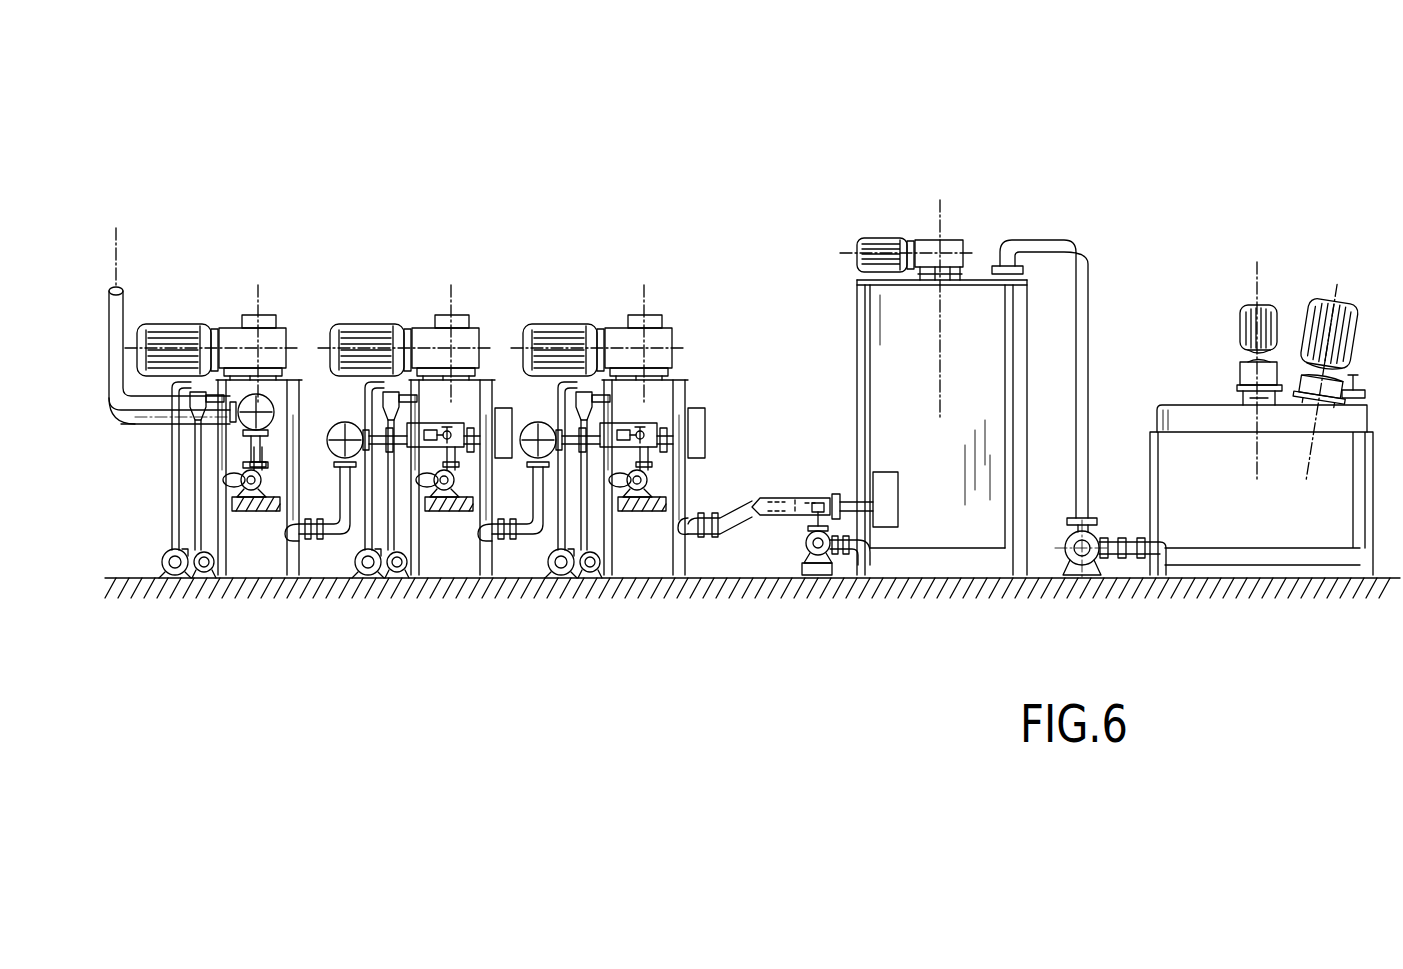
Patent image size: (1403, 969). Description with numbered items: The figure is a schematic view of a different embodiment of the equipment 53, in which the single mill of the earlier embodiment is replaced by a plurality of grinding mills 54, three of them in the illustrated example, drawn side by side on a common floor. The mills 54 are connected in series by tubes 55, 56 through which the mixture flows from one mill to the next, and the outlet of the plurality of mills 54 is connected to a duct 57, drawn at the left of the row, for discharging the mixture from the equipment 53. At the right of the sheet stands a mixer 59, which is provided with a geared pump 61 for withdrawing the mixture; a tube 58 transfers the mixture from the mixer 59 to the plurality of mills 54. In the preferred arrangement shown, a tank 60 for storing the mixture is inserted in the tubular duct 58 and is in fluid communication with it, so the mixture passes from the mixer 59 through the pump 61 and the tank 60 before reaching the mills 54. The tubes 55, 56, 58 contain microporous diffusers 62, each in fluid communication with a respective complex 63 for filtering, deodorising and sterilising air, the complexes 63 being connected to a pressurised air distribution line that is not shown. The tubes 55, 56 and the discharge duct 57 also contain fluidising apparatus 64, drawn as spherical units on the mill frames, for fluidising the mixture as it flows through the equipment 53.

The equipment 53 is at (726, 162).
The grinding mills 54 is at (297, 383).
The tube 55 is at (533, 540).
The tube 56 is at (345, 545).
The duct 57 is at (120, 298).
The tube 58 is at (1068, 242).
The mixer 59 is at (1180, 388).
The tank 60 is at (992, 533).
The geared pump 61 is at (1088, 560).
The microporous diffusers 62 is at (437, 412).
The complexes for filtering, deodorising and sterilising the air 63 is at (703, 440).
The fluidising apparatus 64 is at (254, 402).